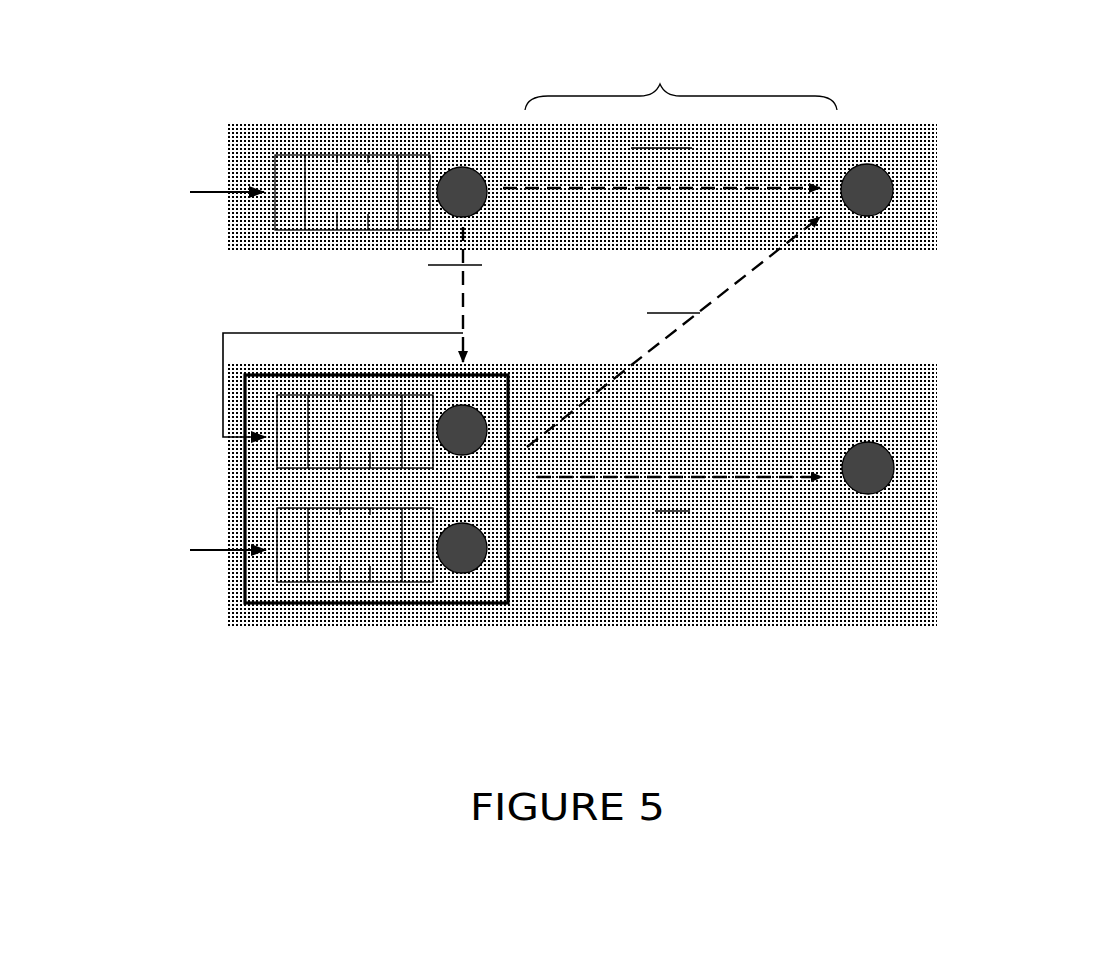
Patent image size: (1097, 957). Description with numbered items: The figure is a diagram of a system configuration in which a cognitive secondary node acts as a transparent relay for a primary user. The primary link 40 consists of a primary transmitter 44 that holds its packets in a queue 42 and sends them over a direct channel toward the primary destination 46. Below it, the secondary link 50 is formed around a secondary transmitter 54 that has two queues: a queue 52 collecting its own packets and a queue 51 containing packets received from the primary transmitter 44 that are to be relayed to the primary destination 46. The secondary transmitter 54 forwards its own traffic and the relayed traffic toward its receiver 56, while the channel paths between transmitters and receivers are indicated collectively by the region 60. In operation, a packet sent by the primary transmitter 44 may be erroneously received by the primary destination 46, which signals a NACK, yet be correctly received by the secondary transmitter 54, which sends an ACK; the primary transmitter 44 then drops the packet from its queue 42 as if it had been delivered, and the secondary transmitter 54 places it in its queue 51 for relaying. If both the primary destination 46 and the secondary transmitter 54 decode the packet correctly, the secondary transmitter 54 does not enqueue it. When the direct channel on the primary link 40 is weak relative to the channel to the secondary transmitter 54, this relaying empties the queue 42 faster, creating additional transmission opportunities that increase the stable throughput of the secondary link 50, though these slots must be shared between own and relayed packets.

The primary link 40 is at (210, 218).
The queue 42 is at (372, 143).
The primary transmitter 44 is at (468, 163).
The primary destination 46 is at (870, 165).
The secondary link 50 is at (254, 499).
The relay queue 51 is at (373, 390).
The own-packet queue 52 is at (413, 590).
The secondary transmitter 54 is at (462, 489).
The secondary receiver 56 is at (868, 495).
The channel 60 is at (625, 283).